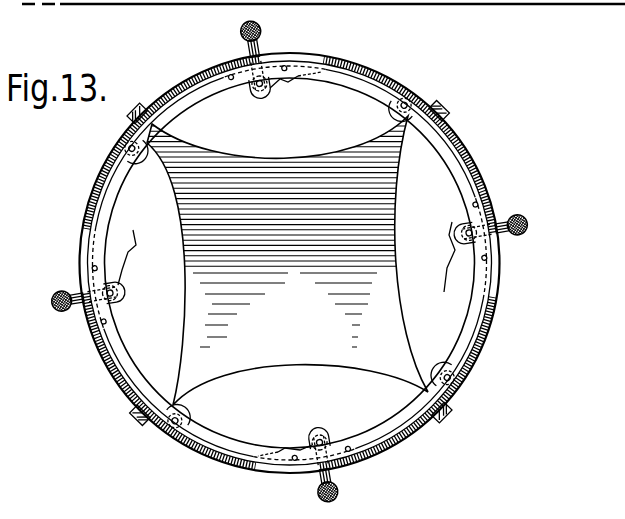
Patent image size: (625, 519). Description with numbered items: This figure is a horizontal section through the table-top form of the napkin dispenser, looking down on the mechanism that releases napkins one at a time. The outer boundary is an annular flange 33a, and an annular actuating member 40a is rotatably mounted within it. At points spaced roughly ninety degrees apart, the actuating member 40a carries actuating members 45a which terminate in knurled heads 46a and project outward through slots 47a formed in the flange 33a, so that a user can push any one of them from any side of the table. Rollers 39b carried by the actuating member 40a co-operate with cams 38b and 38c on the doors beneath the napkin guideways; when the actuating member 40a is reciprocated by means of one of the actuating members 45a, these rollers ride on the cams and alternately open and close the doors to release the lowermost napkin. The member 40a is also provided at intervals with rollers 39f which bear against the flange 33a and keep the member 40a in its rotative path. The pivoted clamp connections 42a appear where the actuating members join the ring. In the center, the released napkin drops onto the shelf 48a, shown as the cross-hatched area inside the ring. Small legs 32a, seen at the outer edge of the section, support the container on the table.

The legs 32a is at (132, 420).
The annular flange 33a is at (486, 344).
The cam 38b is at (130, 248).
The cam 38c is at (288, 80).
The rollers 39b is at (256, 88).
The rollers 39f is at (136, 157).
The annular actuating member 40a is at (181, 100).
The clamp 42a is at (112, 338).
The actuating members 45a is at (326, 474).
The heads 46a is at (263, 27).
The slots 47a is at (82, 250).
The shelf 48a is at (290, 260).